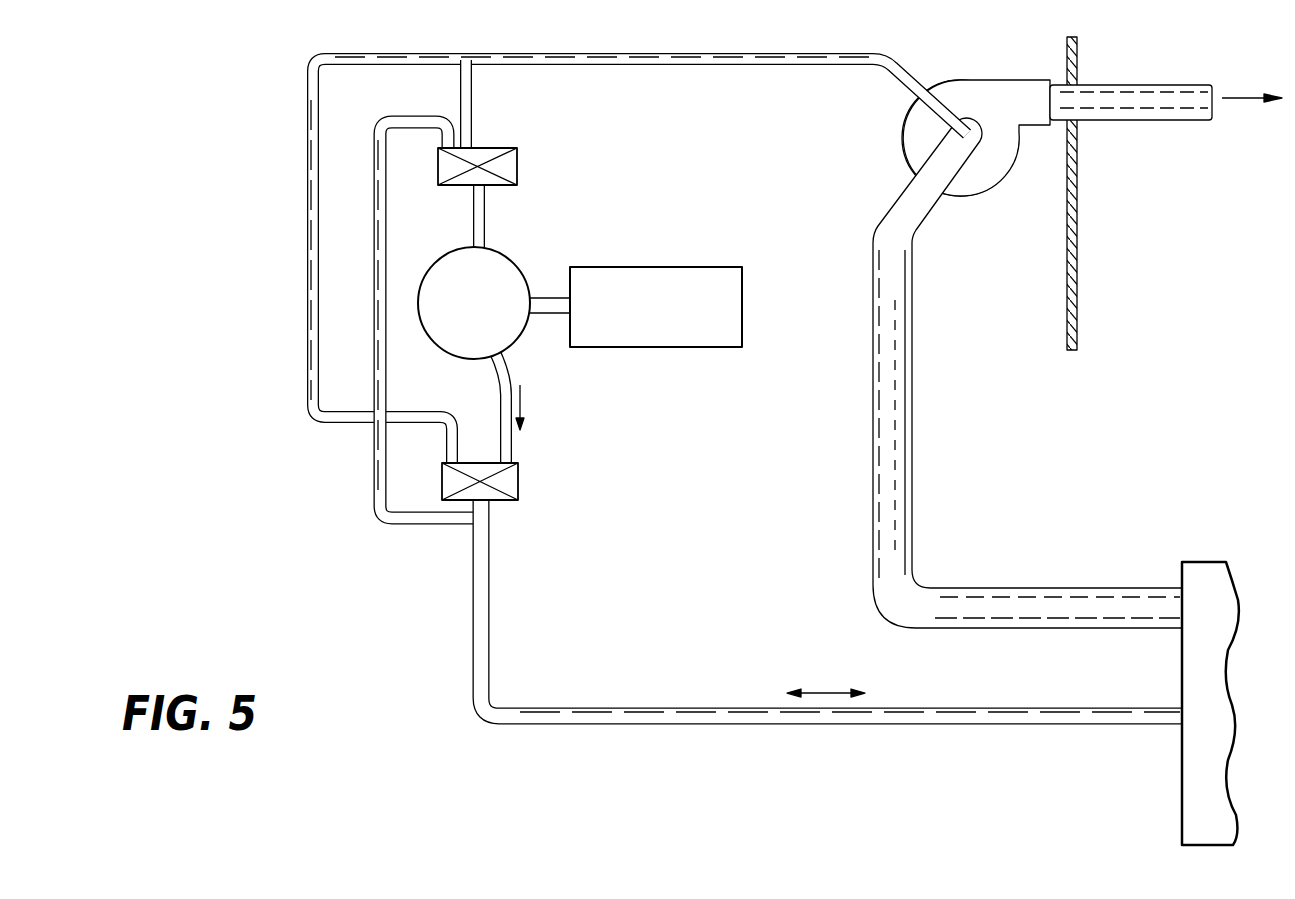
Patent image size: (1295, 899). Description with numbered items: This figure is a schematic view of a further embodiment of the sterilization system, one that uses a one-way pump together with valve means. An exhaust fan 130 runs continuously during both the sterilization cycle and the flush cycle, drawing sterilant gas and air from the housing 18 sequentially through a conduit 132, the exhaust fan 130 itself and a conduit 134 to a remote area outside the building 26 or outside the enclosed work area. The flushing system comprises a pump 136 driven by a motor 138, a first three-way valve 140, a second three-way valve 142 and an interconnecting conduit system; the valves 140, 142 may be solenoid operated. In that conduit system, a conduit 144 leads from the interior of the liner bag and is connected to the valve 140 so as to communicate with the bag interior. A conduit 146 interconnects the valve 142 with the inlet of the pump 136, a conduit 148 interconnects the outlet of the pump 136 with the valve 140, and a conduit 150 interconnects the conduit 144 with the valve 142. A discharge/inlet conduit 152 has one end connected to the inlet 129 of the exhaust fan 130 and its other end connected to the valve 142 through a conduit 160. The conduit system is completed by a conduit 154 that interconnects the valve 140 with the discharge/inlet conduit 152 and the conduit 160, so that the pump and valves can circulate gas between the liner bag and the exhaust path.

The housing 18 is at (1208, 567).
The building 26 is at (1078, 271).
The inlet of exhaust fan 129 is at (982, 108).
The exhaust fan 130 is at (945, 80).
The conduit 132 is at (913, 416).
The conduit 134 is at (1096, 85).
The pump 136 is at (547, 242).
The motor 138 is at (666, 267).
The first three-way valve 140 is at (519, 480).
The second three-way valve 142 is at (518, 164).
The conduit 144 is at (630, 708).
The conduit 146 is at (485, 202).
The conduit 148 is at (512, 376).
The conduit 150 is at (388, 231).
The discharge/inlet conduit 152 is at (660, 53).
The conduit 154 is at (307, 297).
The conduit 160 is at (474, 112).